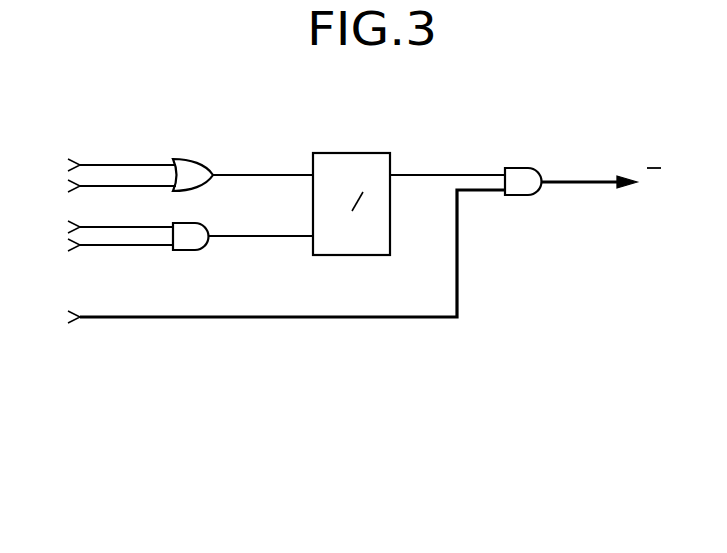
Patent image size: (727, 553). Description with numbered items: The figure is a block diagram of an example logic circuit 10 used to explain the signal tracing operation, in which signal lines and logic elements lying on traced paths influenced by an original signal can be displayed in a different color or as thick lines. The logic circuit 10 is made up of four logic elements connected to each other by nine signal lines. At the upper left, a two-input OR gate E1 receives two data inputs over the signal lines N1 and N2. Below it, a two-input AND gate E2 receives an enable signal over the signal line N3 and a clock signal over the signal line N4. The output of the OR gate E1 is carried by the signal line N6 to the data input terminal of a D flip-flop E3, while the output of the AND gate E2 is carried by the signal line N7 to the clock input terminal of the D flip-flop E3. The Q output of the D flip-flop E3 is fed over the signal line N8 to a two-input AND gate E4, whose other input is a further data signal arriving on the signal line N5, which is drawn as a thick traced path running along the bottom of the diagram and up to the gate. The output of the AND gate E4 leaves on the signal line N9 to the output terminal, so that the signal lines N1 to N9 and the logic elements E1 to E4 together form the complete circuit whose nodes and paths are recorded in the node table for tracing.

The logic circuit 10 is at (536, 265).
The signal line N1 is at (128, 157).
The signal line N2 is at (128, 178).
The signal line N3 is at (126, 219).
The signal line N4 is at (126, 238).
The signal line N5 is at (292, 254).
The signal line N6 is at (263, 165).
The signal line N7 is at (260, 226).
The signal line N8 is at (447, 165).
The signal line N9 is at (589, 173).
The two-input OR gate E1 is at (191, 164).
The two-input AND gate E2 is at (190, 226).
The D flip-flop E3 is at (351, 191).
The two-input AND gate E4 is at (522, 169).